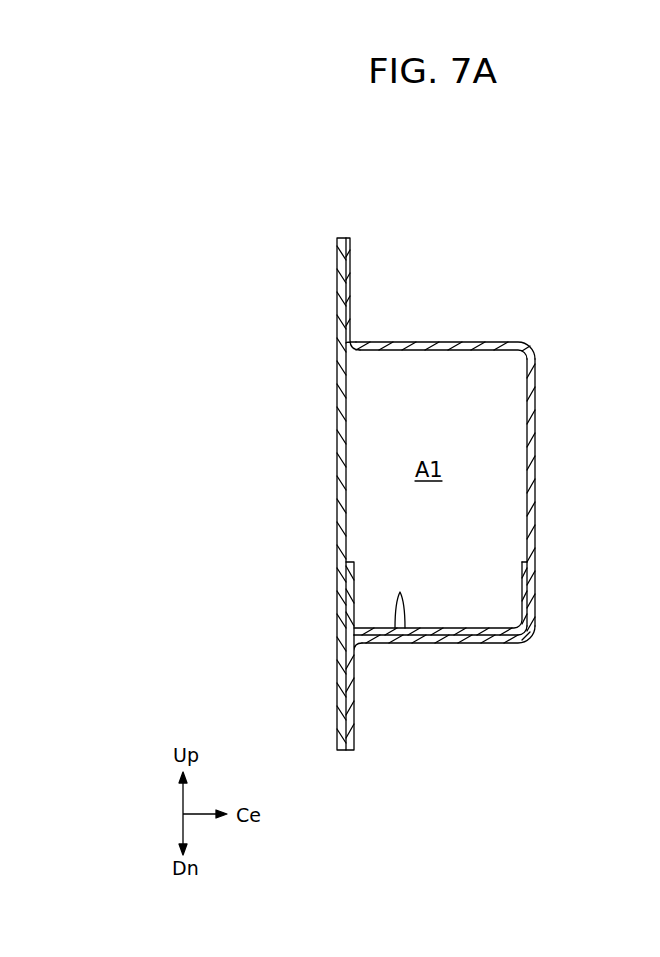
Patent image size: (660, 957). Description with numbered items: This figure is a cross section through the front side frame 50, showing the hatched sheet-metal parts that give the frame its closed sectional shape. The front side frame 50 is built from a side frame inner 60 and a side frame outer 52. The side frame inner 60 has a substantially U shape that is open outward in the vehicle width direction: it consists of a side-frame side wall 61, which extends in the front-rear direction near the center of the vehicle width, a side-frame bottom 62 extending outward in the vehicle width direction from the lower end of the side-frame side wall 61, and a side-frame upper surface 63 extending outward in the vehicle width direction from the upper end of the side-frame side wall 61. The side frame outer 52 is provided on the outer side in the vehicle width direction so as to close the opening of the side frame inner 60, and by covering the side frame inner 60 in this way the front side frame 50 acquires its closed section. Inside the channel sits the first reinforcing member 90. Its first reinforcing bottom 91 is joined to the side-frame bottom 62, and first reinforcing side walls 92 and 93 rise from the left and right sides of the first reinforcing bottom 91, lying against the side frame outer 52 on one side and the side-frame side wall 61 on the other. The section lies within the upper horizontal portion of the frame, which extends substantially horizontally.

The front side frame 50 is at (470, 183).
The side frame outer 52 is at (336, 273).
The side frame inner 60 is at (418, 340).
The side-frame side wall 61 is at (537, 438).
The side-frame bottom 62 is at (457, 643).
The side-frame upper surface 63 is at (478, 341).
The first reinforcing member 90 is at (405, 628).
The first reinforcing bottom 91 is at (476, 628).
The first reinforcing side wall 92 is at (352, 572).
The first reinforcing side wall 93 is at (517, 572).